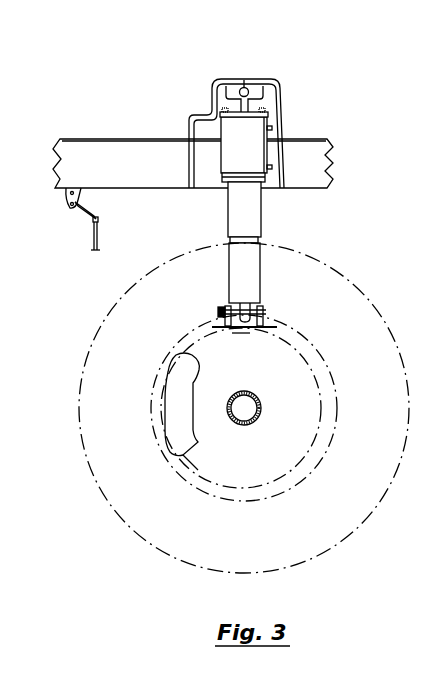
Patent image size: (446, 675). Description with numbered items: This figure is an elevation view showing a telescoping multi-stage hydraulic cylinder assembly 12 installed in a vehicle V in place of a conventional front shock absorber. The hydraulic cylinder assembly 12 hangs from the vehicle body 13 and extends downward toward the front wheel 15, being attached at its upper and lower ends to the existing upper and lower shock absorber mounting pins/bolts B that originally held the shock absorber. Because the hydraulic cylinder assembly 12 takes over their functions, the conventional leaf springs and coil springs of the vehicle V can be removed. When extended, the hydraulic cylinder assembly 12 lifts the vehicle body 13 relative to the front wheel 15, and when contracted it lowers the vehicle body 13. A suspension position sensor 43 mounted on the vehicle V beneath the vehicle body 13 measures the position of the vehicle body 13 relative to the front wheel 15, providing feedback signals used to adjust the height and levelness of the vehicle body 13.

The vehicle V is at (85, 148).
The vehicle body 13 is at (127, 152).
The telescoping multi-stage hydraulic cylinder assembly 12 is at (247, 221).
The shock absorber mounting pins/bolts B is at (244, 87).
The suspension position sensor 43 is at (66, 200).
The front wheel 15 is at (145, 540).